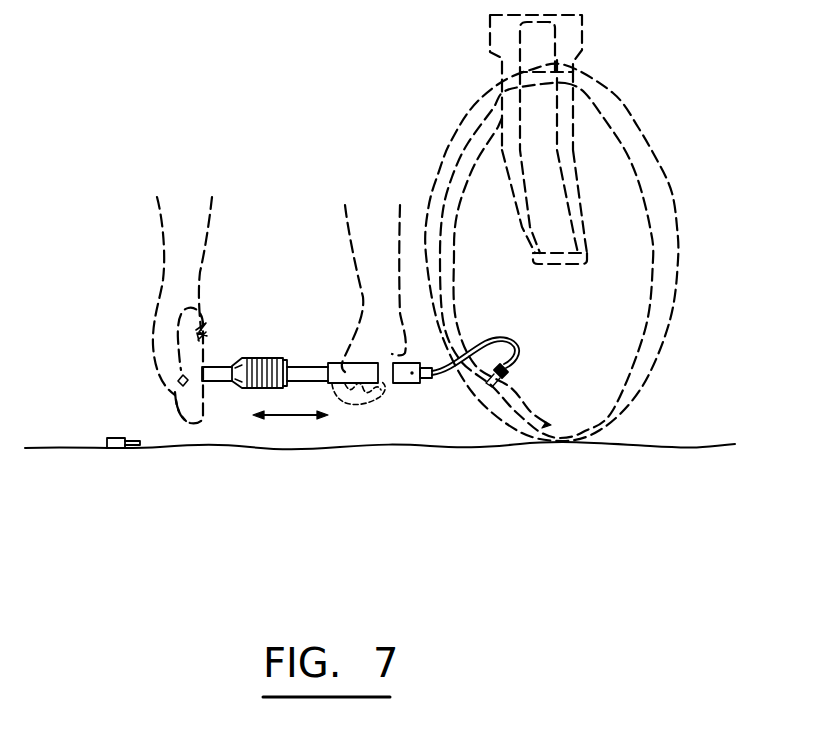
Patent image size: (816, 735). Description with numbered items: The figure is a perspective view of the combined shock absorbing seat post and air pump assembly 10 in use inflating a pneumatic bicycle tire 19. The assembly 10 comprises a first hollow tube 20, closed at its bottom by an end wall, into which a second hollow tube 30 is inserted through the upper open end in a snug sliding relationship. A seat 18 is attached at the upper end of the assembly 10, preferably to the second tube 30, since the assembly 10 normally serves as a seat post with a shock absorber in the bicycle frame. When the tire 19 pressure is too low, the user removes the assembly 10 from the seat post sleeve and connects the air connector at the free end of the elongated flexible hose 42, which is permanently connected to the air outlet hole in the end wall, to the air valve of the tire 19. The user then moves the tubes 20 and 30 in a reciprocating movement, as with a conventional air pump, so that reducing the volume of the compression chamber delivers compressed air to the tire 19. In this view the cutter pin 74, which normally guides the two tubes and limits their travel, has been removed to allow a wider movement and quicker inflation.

The combined shock absorbing seat post and air pump assembly 10 is at (290, 358).
The seat 18 is at (172, 401).
The pneumatic bicycle tire 19 is at (671, 193).
The first hollow tube 20 is at (415, 384).
The second hollow tube 30 is at (224, 402).
The elongated flexible hose 42 is at (445, 385).
The cutter pin 74 is at (108, 440).